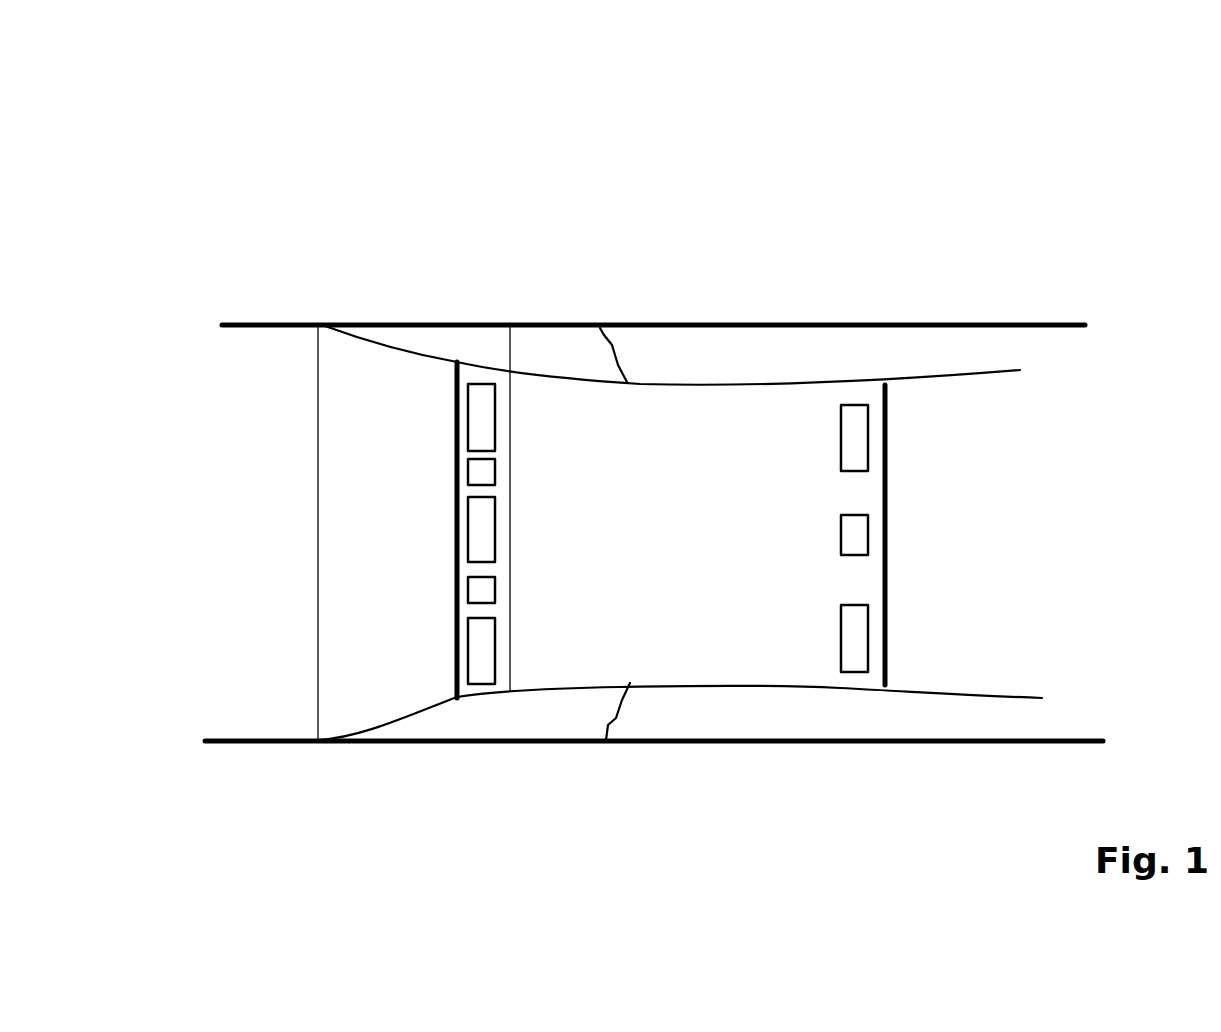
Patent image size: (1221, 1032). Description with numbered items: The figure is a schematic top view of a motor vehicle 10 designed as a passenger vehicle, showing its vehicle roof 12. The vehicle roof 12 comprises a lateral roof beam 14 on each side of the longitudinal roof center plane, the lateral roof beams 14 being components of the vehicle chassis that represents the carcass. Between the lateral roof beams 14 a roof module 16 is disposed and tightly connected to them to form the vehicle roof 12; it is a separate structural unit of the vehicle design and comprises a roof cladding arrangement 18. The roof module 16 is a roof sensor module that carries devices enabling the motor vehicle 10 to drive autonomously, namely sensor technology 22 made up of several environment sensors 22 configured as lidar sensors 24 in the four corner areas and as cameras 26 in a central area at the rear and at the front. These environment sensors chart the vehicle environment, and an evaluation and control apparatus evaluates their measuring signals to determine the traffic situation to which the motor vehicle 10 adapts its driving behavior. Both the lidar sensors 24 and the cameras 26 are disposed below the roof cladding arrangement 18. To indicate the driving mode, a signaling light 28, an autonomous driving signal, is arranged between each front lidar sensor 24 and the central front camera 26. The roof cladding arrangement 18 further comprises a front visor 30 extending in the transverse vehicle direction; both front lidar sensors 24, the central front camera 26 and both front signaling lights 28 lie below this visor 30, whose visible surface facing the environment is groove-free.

The motor vehicle 10 is at (1054, 141).
The vehicle roof 12 is at (768, 382).
The lateral roof beam 14 is at (642, 383).
The roof module 16 is at (455, 483).
The roof cladding arrangement 18 is at (713, 538).
The sensor technology 22 is at (455, 652).
The lidar sensor 24 is at (482, 416).
The camera 26 is at (482, 535).
The signaling light 28 is at (478, 472).
The front visor 30 is at (510, 325).